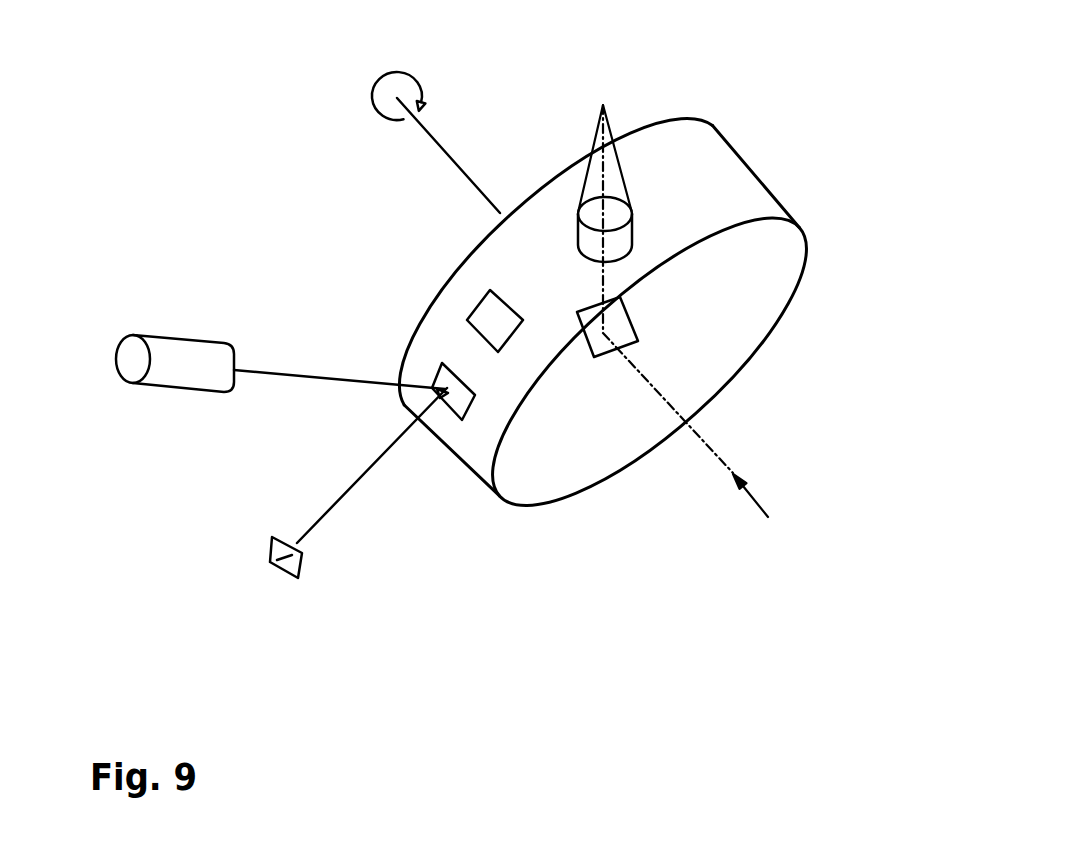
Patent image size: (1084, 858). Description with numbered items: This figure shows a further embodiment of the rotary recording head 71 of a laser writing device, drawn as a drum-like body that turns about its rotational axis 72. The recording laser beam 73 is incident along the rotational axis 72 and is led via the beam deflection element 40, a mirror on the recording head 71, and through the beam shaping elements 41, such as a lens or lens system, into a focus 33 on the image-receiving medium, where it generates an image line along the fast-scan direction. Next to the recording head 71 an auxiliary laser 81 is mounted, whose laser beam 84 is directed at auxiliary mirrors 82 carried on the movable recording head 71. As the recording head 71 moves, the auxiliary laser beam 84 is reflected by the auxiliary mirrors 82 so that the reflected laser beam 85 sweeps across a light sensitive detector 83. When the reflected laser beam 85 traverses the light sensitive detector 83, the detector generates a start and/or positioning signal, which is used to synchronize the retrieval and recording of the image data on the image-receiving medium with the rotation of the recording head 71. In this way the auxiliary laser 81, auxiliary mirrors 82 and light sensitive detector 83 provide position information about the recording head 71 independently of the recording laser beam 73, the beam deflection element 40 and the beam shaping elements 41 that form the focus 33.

The focus 33 is at (603, 105).
The beam shaping elements 41 is at (627, 233).
The recording head 71 is at (740, 183).
The rotational axis 72 is at (450, 150).
The laser beam 73 is at (700, 437).
The beam deflection element 40 is at (623, 318).
The auxiliary laser 81 is at (190, 372).
The deflection mirrors 82 is at (447, 390).
The light sensitive detector 83 is at (272, 562).
The laser beam 84 is at (267, 377).
The reflected laser beam 85 is at (333, 508).